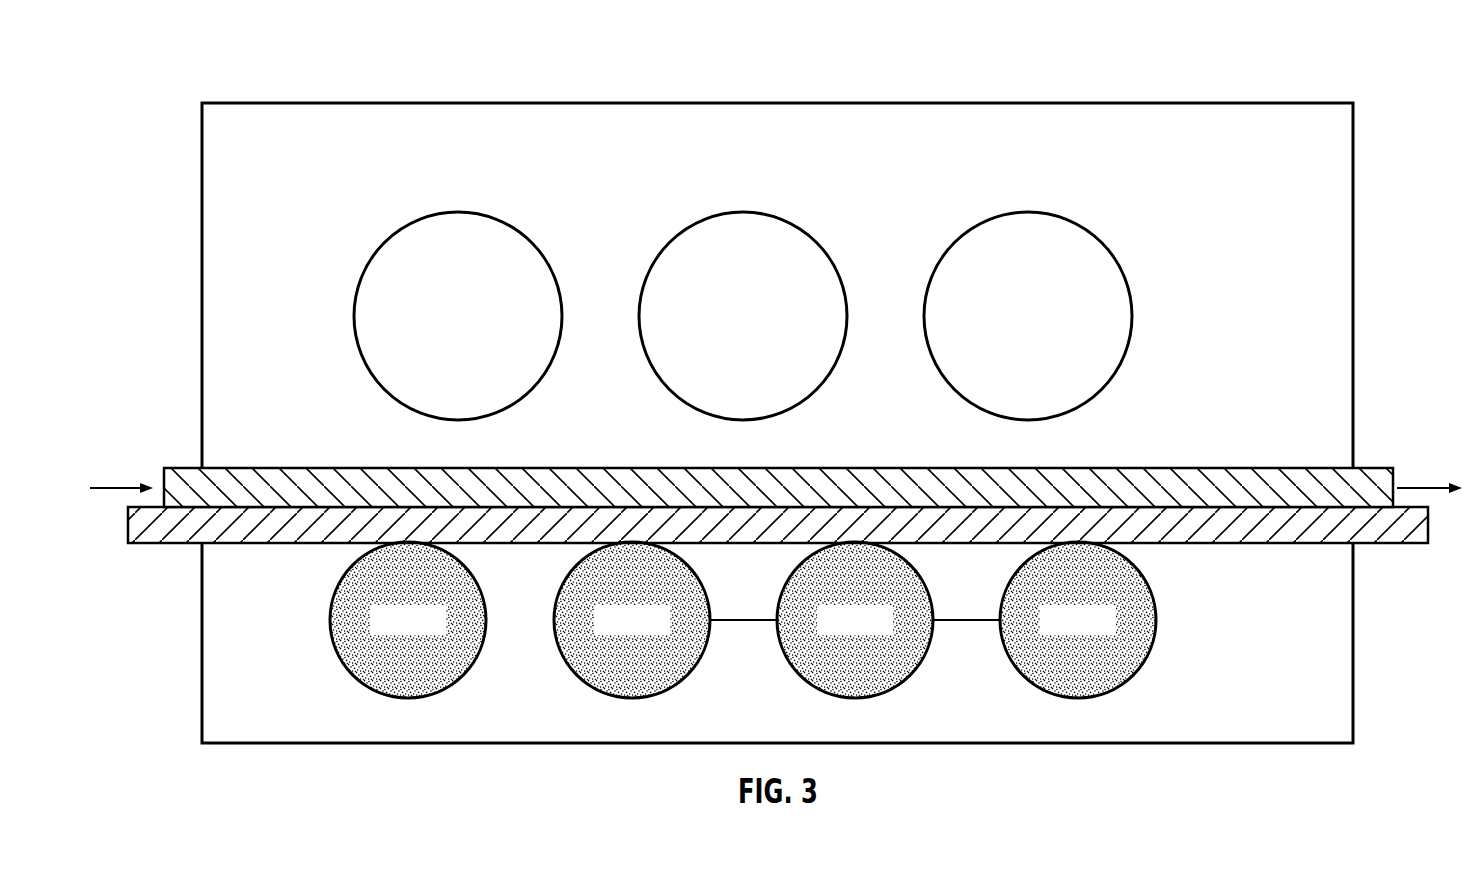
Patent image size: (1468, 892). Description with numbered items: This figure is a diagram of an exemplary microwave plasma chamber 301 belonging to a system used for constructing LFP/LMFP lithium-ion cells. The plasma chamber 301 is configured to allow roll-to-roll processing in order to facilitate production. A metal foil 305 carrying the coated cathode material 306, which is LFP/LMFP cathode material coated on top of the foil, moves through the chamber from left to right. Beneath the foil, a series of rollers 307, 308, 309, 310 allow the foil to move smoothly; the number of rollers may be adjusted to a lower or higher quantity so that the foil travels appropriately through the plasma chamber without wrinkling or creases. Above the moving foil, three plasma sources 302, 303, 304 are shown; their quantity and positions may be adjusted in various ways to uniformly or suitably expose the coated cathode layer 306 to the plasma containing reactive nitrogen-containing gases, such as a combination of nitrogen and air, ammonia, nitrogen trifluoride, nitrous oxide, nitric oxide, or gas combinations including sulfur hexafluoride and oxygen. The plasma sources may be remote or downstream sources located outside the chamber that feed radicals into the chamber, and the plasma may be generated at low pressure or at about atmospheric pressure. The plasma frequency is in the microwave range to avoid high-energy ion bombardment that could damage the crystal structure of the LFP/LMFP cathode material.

The plasma chamber 301 is at (262, 103).
The plasma source 302 is at (457, 212).
The plasma source 303 is at (742, 212).
The plasma source 304 is at (1027, 212).
The metal foil 305 is at (267, 543).
The coated cathode material 306 is at (263, 468).
The roller 307 is at (348, 674).
The roller 308 is at (580, 674).
The roller 309 is at (800, 674).
The roller 310 is at (1025, 674).